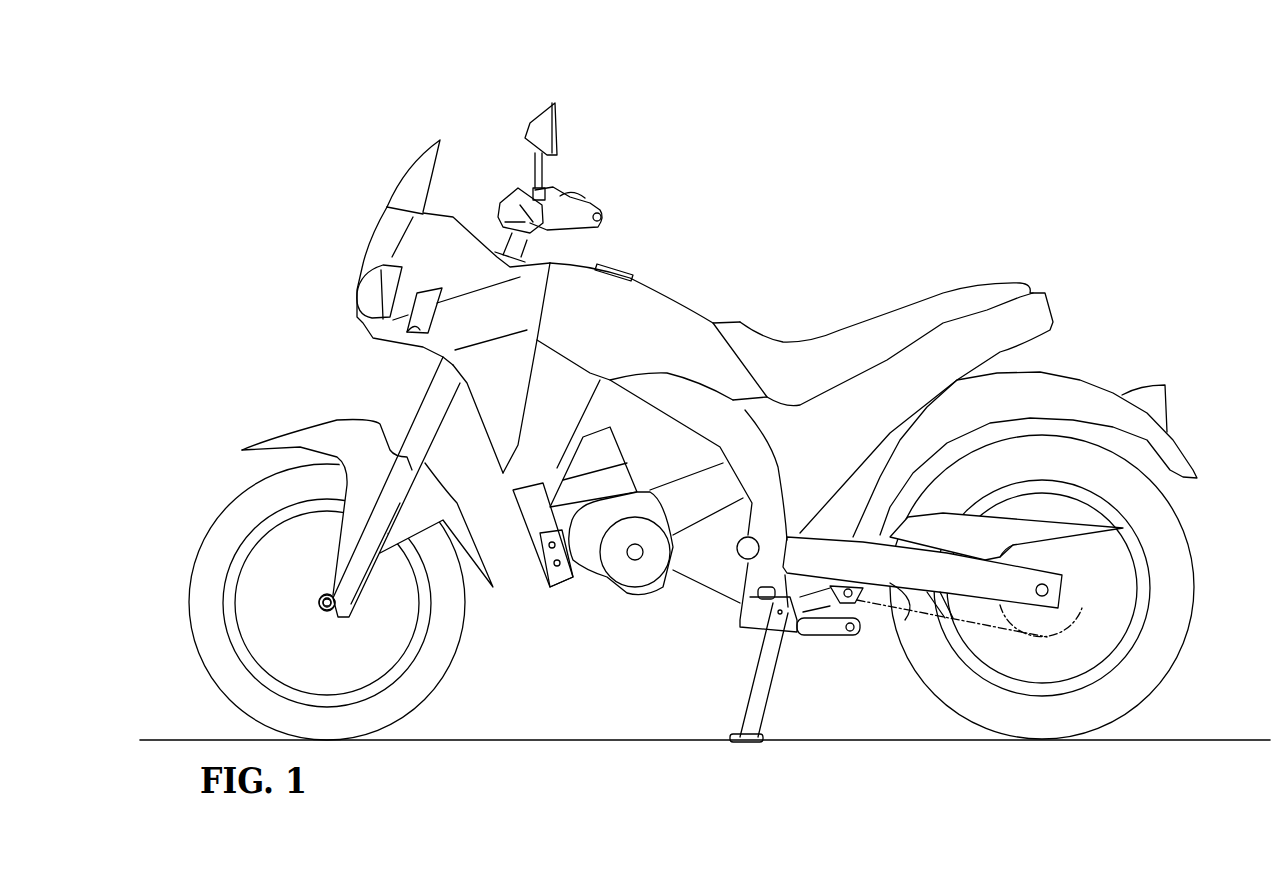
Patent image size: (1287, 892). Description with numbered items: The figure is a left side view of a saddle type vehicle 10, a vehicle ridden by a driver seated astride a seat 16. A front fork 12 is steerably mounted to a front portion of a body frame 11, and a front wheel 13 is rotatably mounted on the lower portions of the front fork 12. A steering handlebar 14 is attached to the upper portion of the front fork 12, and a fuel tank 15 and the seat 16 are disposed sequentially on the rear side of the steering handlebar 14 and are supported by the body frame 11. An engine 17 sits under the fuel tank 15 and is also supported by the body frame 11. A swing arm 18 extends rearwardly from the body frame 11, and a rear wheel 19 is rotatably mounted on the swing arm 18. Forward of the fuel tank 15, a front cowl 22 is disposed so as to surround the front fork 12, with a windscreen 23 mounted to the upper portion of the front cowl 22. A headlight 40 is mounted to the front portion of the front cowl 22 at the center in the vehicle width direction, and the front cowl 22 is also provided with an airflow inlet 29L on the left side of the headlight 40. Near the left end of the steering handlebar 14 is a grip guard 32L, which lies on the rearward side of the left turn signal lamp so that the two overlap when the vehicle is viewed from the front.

The saddle type vehicle 10 is at (247, 153).
The body frame 11 is at (533, 517).
The front fork 12 is at (433, 397).
The front wheel 13 is at (218, 513).
The steering handlebar 14 is at (553, 188).
The fuel tank 15 is at (647, 300).
The seat 16 is at (807, 353).
The engine 17 is at (643, 572).
The swing arm 18 is at (912, 583).
The rear wheel 19 is at (1168, 592).
The front cowl 22 is at (395, 218).
The windscreen 23 is at (423, 160).
The airflow inlet 29L is at (420, 335).
The grip guard 32L is at (515, 197).
The headlight 40 is at (368, 295).